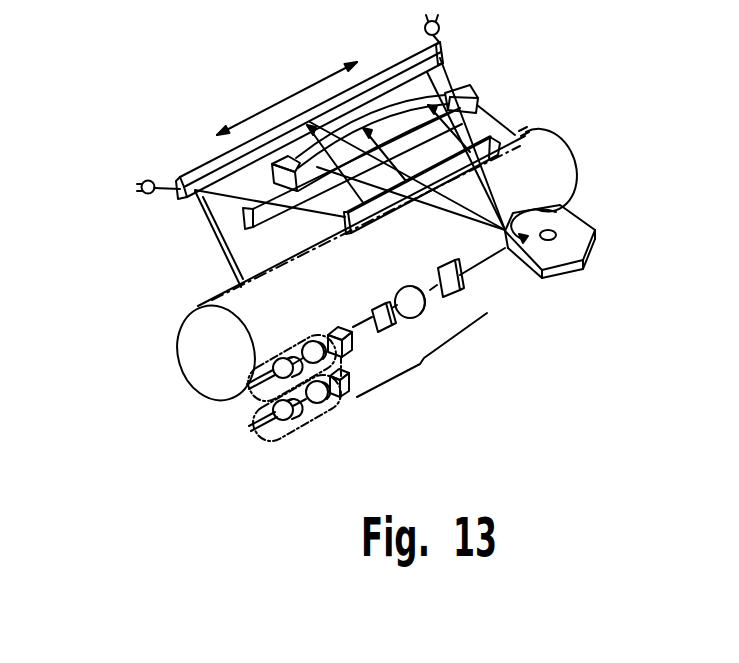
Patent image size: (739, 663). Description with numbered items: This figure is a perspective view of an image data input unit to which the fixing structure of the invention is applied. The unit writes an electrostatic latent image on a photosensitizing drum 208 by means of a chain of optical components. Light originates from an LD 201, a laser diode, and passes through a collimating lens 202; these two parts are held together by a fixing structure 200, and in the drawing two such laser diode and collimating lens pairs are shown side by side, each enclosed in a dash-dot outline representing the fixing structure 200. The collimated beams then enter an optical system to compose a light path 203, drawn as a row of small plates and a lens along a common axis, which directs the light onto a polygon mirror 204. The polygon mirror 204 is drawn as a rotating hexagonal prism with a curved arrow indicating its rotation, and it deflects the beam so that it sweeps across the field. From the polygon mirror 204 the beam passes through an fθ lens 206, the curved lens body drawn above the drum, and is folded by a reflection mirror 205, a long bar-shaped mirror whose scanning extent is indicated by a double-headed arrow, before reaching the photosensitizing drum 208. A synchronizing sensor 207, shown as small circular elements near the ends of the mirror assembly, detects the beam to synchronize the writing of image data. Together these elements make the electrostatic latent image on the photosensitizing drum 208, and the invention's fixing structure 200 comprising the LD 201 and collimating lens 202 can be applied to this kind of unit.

The fixing structure 200 is at (257, 400).
The LD 201 is at (279, 357).
The collimating lens 202 is at (312, 337).
The optical system to compose a light path 203 is at (429, 322).
The polygon mirror 204 is at (577, 224).
The reflection mirror 205 is at (207, 177).
The fθ lens 206 is at (473, 92).
The synchronizing sensor 207 is at (143, 180).
The photosensitizing drum 208 is at (560, 150).